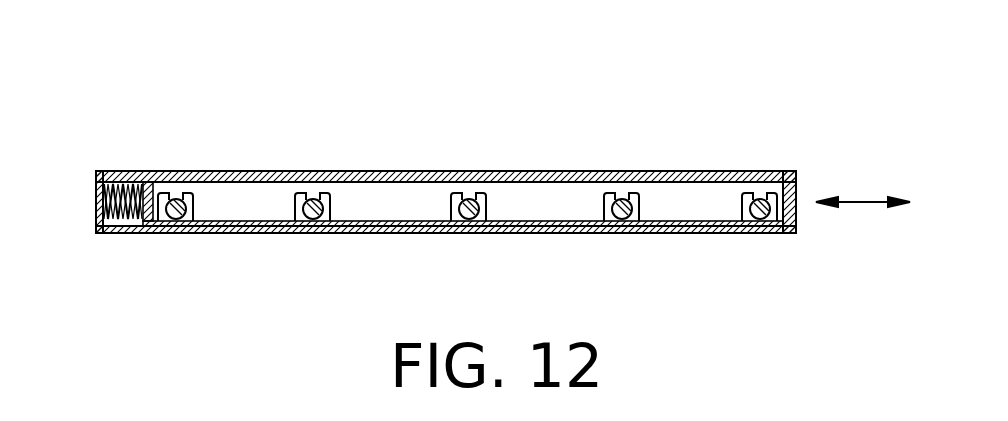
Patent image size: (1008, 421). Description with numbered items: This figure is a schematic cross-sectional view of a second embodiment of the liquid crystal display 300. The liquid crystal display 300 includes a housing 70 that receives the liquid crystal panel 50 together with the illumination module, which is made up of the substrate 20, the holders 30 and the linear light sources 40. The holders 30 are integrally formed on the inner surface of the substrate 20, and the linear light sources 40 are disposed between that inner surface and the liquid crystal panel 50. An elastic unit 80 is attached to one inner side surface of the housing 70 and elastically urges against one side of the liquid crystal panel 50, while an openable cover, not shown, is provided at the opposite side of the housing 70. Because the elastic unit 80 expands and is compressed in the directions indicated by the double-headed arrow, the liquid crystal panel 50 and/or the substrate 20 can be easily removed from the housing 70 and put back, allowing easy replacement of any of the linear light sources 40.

The liquid crystal display 300 is at (505, 45).
The substrate 20 is at (382, 228).
The holders 30 is at (300, 193).
The linear light sources 40 is at (312, 215).
The liquid crystal panel 50 is at (645, 172).
The housing 70 is at (623, 230).
The elastic unit 80 is at (133, 222).